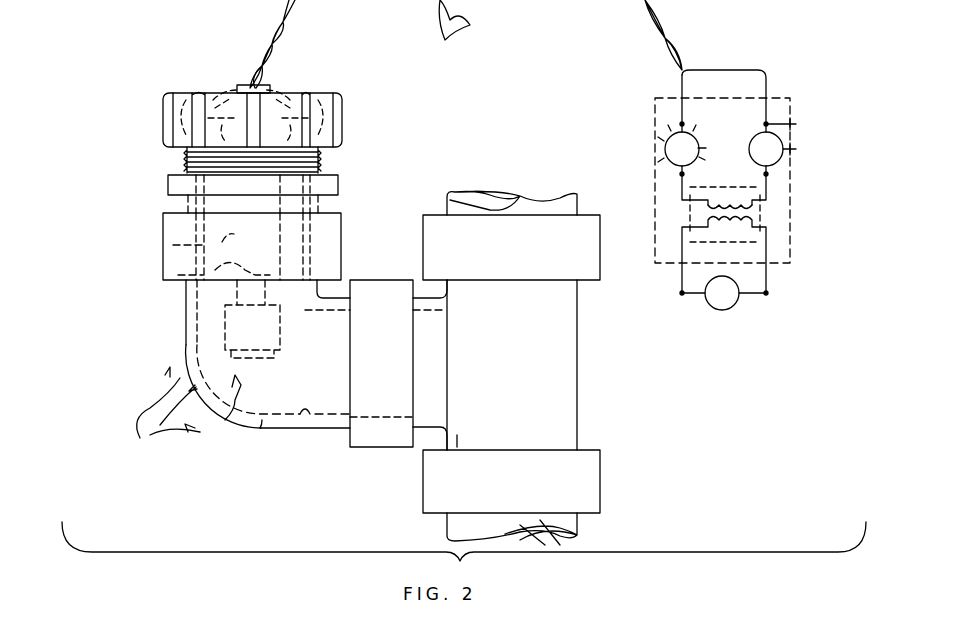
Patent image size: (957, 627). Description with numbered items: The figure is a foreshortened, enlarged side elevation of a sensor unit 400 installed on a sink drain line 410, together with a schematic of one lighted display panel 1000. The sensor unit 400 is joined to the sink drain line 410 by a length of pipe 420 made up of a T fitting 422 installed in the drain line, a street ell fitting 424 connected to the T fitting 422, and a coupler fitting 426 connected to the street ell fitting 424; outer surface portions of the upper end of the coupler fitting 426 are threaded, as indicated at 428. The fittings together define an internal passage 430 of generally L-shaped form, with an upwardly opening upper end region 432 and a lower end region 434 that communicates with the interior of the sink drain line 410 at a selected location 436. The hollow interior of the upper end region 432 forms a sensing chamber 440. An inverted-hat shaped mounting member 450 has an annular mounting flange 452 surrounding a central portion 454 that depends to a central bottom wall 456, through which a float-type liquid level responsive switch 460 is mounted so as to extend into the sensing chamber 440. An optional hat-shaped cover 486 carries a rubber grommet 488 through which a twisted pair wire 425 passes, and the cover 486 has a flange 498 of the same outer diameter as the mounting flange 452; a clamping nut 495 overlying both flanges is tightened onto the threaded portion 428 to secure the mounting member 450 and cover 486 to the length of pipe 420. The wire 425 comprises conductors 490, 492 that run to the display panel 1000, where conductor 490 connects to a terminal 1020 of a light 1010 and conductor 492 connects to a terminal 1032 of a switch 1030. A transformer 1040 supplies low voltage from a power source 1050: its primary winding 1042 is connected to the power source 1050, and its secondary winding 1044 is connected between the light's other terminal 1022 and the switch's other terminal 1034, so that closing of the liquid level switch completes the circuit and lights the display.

The sensor unit 400 is at (144, 64).
The clamping nut 495 is at (167, 120).
The mounting flange 452 is at (190, 152).
The mounting member 450 is at (310, 125).
The flange 498 is at (305, 104).
The cover 486 is at (280, 82).
The rubber grommet 488 is at (236, 80).
The conductor 490 is at (253, 84).
The conductor 492 is at (265, 78).
The threaded portion 428 is at (333, 166).
The coupler fitting 426 is at (350, 194).
The upper end region 432 is at (208, 211).
The central portion 454 is at (167, 255).
The central bottom wall 456 is at (175, 284).
The sensing chamber 440 is at (190, 352).
The float-type liquid level responsive switch 460 is at (243, 428).
The street ell fitting 424 is at (265, 440).
The internal passage 430 is at (324, 430).
The length of pipe 420 is at (169, 405).
The lower end region 434 is at (422, 426).
The T fitting 422 is at (566, 372).
The selected location 436 is at (542, 345).
The sink drain line 410 is at (510, 178).
The wire 425 is at (448, 19).
The display panel 1000 is at (797, 82).
The light 1010 is at (662, 142).
The terminal 1020 is at (682, 124).
The terminal 1022 is at (683, 176).
The switch 1030 is at (808, 156).
The terminal 1032 is at (790, 122).
The terminal 1034 is at (768, 176).
The secondary winding 1044 is at (728, 203).
The transformer 1040 is at (762, 203).
The primary winding 1042 is at (733, 224).
The power source 1050 is at (749, 314).